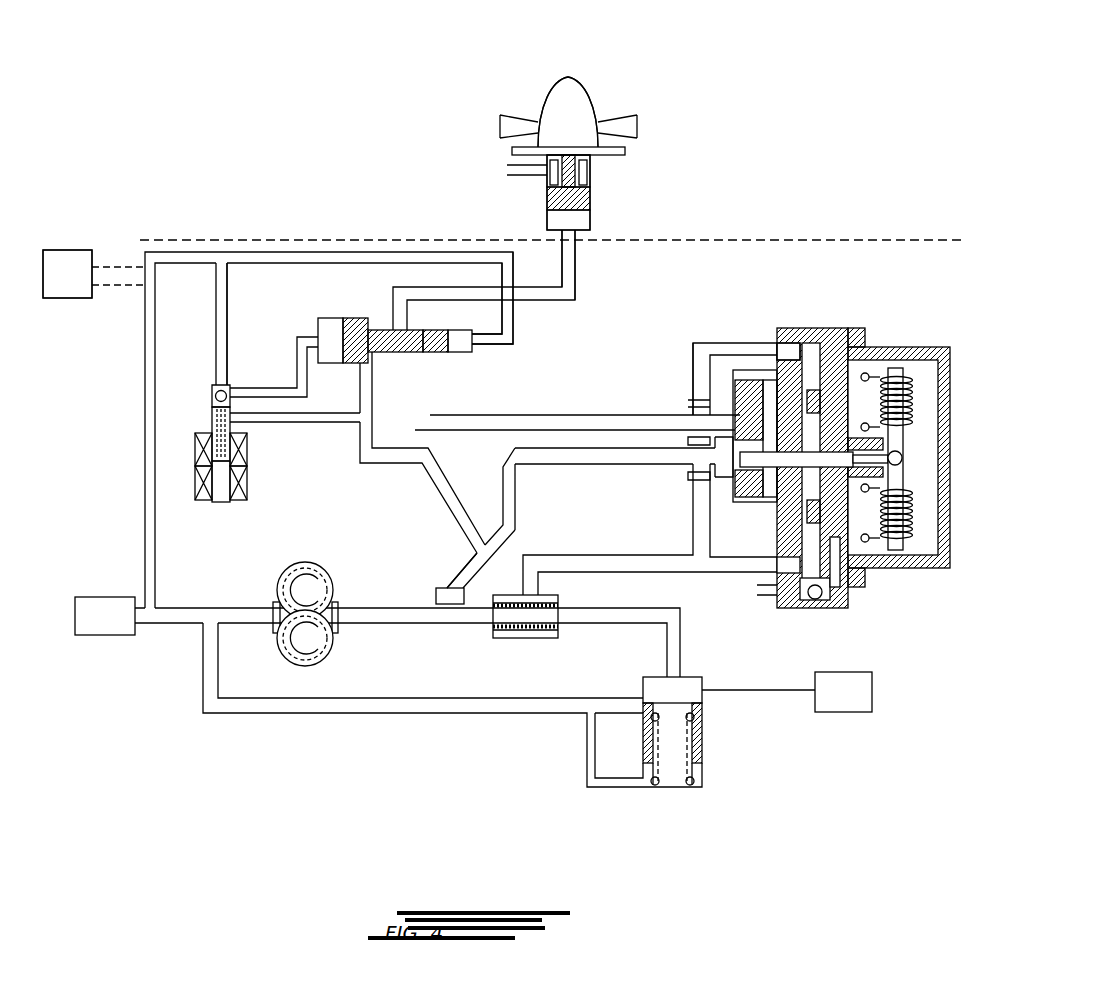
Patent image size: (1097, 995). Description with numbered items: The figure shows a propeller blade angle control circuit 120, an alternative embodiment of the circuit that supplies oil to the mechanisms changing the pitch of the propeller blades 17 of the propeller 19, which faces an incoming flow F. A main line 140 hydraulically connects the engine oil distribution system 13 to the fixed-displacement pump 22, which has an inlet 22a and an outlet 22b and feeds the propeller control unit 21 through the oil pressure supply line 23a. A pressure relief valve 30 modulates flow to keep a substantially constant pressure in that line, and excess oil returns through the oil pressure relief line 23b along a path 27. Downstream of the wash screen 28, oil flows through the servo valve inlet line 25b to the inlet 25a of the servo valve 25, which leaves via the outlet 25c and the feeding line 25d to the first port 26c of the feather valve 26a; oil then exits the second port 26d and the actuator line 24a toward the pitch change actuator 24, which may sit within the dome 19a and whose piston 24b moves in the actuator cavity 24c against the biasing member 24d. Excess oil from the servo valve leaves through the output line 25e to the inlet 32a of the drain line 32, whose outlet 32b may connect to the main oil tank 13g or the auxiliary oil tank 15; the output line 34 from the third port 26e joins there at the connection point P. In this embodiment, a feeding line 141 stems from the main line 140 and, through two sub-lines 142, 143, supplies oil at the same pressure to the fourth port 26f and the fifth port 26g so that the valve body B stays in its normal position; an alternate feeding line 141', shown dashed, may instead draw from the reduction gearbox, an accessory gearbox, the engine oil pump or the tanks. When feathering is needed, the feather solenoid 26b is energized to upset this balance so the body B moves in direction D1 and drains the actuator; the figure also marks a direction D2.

The engine oil distribution system 13 is at (473, 654).
The main oil tank 13g is at (68, 250).
The auxiliary oil tank 15 is at (67, 274).
The propeller blades 17 is at (500, 127).
The propeller 19 is at (587, 88).
The dome 19a is at (568, 112).
The propeller control unit 21 is at (650, 325).
The fixed-displacement pump 22 is at (290, 566).
The inlet 22a is at (251, 598).
The outlet 22b is at (352, 597).
The oil pressure supply line 23a is at (673, 638).
The oil pressure relief line 23b is at (762, 690).
The pitch change actuator 24 is at (592, 207).
The actuator line 24a is at (542, 303).
The piston 24b is at (547, 203).
The actuator cavity 24c is at (565, 222).
The biasing member 24d is at (590, 176).
The servo valve 25 is at (845, 308).
The inlet 25a is at (767, 333).
The servo valve inlet line 25b is at (627, 555).
The outlet 25c is at (677, 392).
The feeding line 25d is at (527, 413).
The output line 25e is at (561, 466).
The feather valve 26a is at (345, 333).
The feather solenoid 26b is at (262, 473).
The first port 26c is at (440, 361).
The second port 26d is at (382, 297).
The third port 26e is at (346, 378).
The fourth port 26f is at (318, 332).
The fifth port 26g is at (472, 340).
The path 27 is at (712, 703).
The wash screen 28 is at (528, 640).
The pressure relief valve 30 is at (718, 754).
The drain line 32 is at (477, 608).
The inlet 32a is at (463, 551).
The outlet 32b is at (428, 583).
The output line 34 is at (393, 448).
The propeller blade angle control circuit 120 is at (200, 252).
The main line 140 is at (168, 625).
The feeding line 141 is at (292, 430).
The alternate feeding line 141' is at (108, 317).
The sub-line 142 is at (238, 280).
The sub-line 143 is at (423, 255).
The valve body B is at (318, 340).
The direction D1 is at (297, 337).
The second direction D2 is at (197, 328).
The incoming flow F is at (568, 27).
The connection point P is at (489, 510).